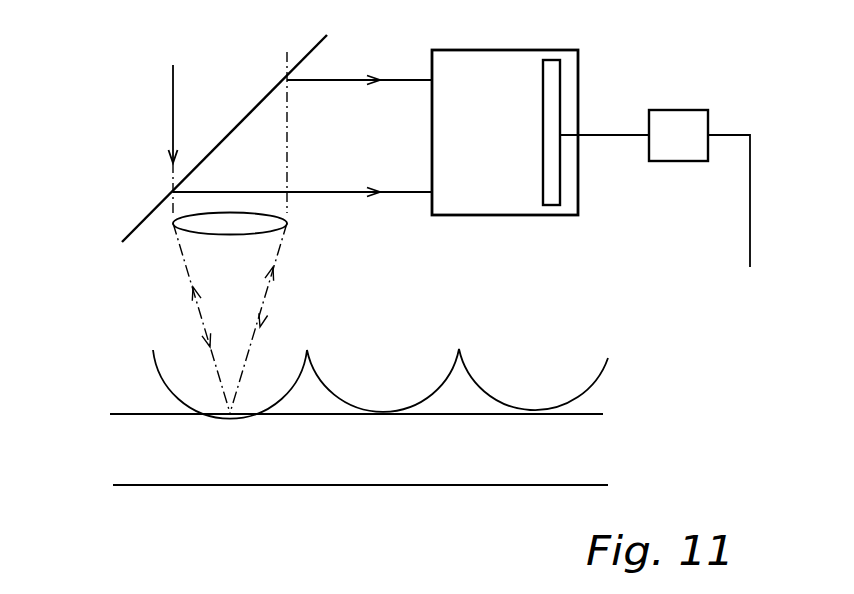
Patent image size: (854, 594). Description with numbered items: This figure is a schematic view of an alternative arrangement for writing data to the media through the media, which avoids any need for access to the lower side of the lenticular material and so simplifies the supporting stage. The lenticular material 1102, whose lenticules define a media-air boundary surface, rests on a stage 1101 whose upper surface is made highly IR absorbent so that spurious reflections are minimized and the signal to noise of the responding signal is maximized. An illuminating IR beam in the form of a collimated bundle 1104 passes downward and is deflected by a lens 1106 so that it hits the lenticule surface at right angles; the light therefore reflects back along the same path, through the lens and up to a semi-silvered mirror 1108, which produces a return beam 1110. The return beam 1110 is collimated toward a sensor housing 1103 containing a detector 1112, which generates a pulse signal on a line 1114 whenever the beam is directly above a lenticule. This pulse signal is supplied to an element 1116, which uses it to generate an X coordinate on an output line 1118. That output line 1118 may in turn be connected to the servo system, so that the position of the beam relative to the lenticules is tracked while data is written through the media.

The stage 1101 is at (379, 463).
The structured surface 1102 is at (127, 414).
The collimated bundle 1104 is at (270, 293).
The lens 1106 is at (287, 225).
The semi-silvered mirror 1108 is at (180, 183).
The return beam 1110 is at (405, 193).
The detector unit 1103 is at (493, 50).
The detector 1112 is at (561, 76).
The line 1114 is at (605, 135).
The element 1116 is at (675, 148).
The line 1118 is at (750, 242).